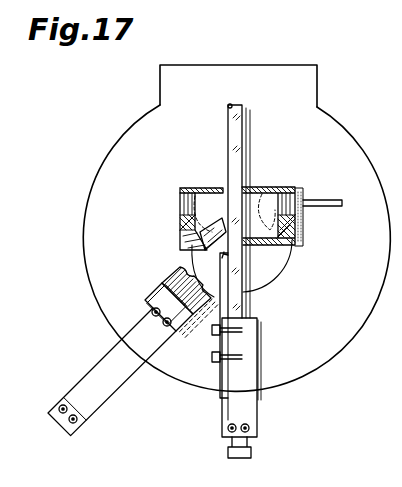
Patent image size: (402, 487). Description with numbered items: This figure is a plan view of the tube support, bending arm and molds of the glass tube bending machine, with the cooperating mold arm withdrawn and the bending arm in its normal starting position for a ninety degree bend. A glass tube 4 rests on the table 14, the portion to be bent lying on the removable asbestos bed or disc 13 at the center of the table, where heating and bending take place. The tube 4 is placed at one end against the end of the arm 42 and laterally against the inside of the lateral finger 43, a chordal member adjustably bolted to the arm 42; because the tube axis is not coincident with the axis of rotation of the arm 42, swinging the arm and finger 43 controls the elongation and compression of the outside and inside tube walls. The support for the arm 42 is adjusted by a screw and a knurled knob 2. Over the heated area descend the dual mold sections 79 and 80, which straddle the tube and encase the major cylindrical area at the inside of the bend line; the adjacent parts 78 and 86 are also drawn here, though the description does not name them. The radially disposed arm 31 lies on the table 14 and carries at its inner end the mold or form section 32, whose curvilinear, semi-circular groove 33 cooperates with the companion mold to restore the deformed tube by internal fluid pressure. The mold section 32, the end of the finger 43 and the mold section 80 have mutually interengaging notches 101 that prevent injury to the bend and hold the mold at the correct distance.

The knurled knob 2 is at (230, 452).
The glass tube 4 is at (235, 106).
The bed or disc 13 is at (276, 265).
The table 14 is at (112, 152).
The radially disposed arm 31 is at (92, 371).
The mold or form section 32 is at (155, 291).
The curvilinear groove 33 is at (168, 280).
The arm 42 is at (257, 370).
The lateral finger 43 is at (220, 366).
The left bracket 78 is at (192, 190).
The mold 79 is at (265, 200).
The mold section 80 is at (212, 196).
The pin 86 is at (325, 200).
The interengaging notches 101 is at (222, 258).